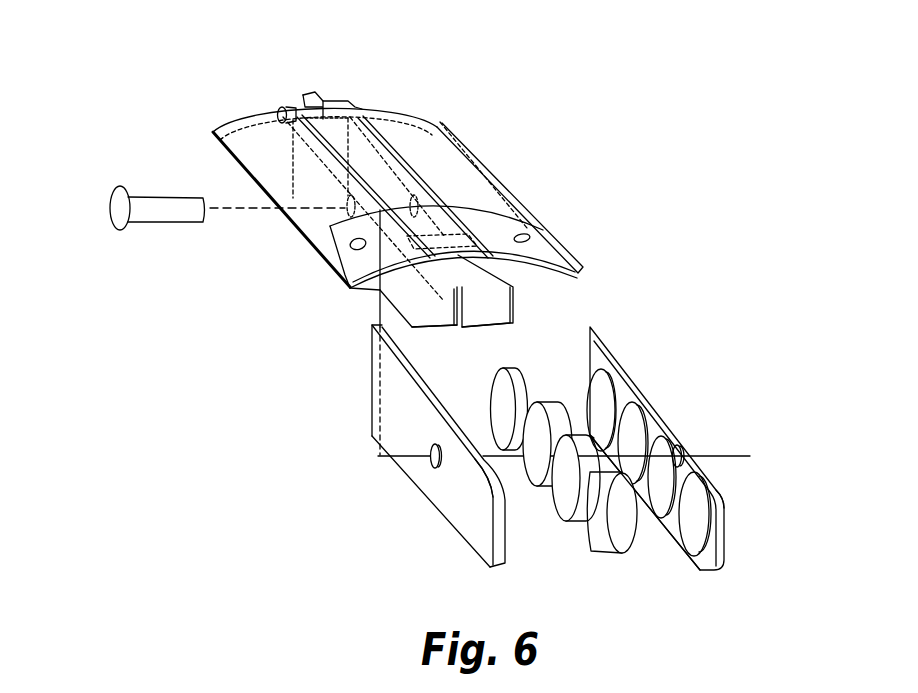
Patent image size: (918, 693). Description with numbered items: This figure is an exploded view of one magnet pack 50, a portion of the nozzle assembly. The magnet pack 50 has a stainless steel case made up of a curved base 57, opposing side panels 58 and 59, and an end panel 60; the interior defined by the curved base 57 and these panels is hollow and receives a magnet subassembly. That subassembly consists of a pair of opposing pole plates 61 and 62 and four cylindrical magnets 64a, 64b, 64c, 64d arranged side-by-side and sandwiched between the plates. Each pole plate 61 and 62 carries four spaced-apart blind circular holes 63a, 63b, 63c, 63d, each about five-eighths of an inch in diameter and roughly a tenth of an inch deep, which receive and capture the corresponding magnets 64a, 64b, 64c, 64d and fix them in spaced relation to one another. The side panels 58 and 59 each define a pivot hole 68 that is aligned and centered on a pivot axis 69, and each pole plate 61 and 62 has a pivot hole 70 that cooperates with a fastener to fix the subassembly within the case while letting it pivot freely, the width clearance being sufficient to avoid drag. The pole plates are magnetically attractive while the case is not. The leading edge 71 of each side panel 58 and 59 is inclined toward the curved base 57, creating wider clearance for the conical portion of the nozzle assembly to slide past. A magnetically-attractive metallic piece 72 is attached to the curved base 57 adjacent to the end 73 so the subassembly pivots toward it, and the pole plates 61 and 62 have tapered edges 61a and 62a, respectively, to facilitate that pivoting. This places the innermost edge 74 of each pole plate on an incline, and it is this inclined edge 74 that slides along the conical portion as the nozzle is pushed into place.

The magnet pack 50 is at (641, 212).
The curved base 57 is at (418, 160).
The side panel 58 is at (405, 288).
The side panel 59 is at (490, 244).
The end panel 60 is at (306, 92).
The pole plate 61 is at (372, 412).
The tapered edge 61a is at (482, 466).
The pole plate 62 is at (588, 326).
The tapered edge 62a is at (703, 461).
The blind circular hole 63a is at (713, 550).
The blind circular hole 63b is at (653, 505).
The blind circular hole 63c is at (604, 432).
The blind circular hole 63d is at (597, 385).
The cylindrical magnet 64a is at (600, 520).
The cylindrical magnet 64b is at (567, 472).
The cylindrical magnet 64c is at (538, 425).
The cylindrical magnet 64d is at (500, 378).
The pivot hole 68 is at (443, 208).
The pivot axis 69 is at (243, 200).
The pivot hole 70 is at (428, 465).
The leading edge 71 is at (507, 330).
The metallic piece 72 is at (487, 228).
The end 73 is at (362, 290).
The innermost edge 74 is at (490, 478).